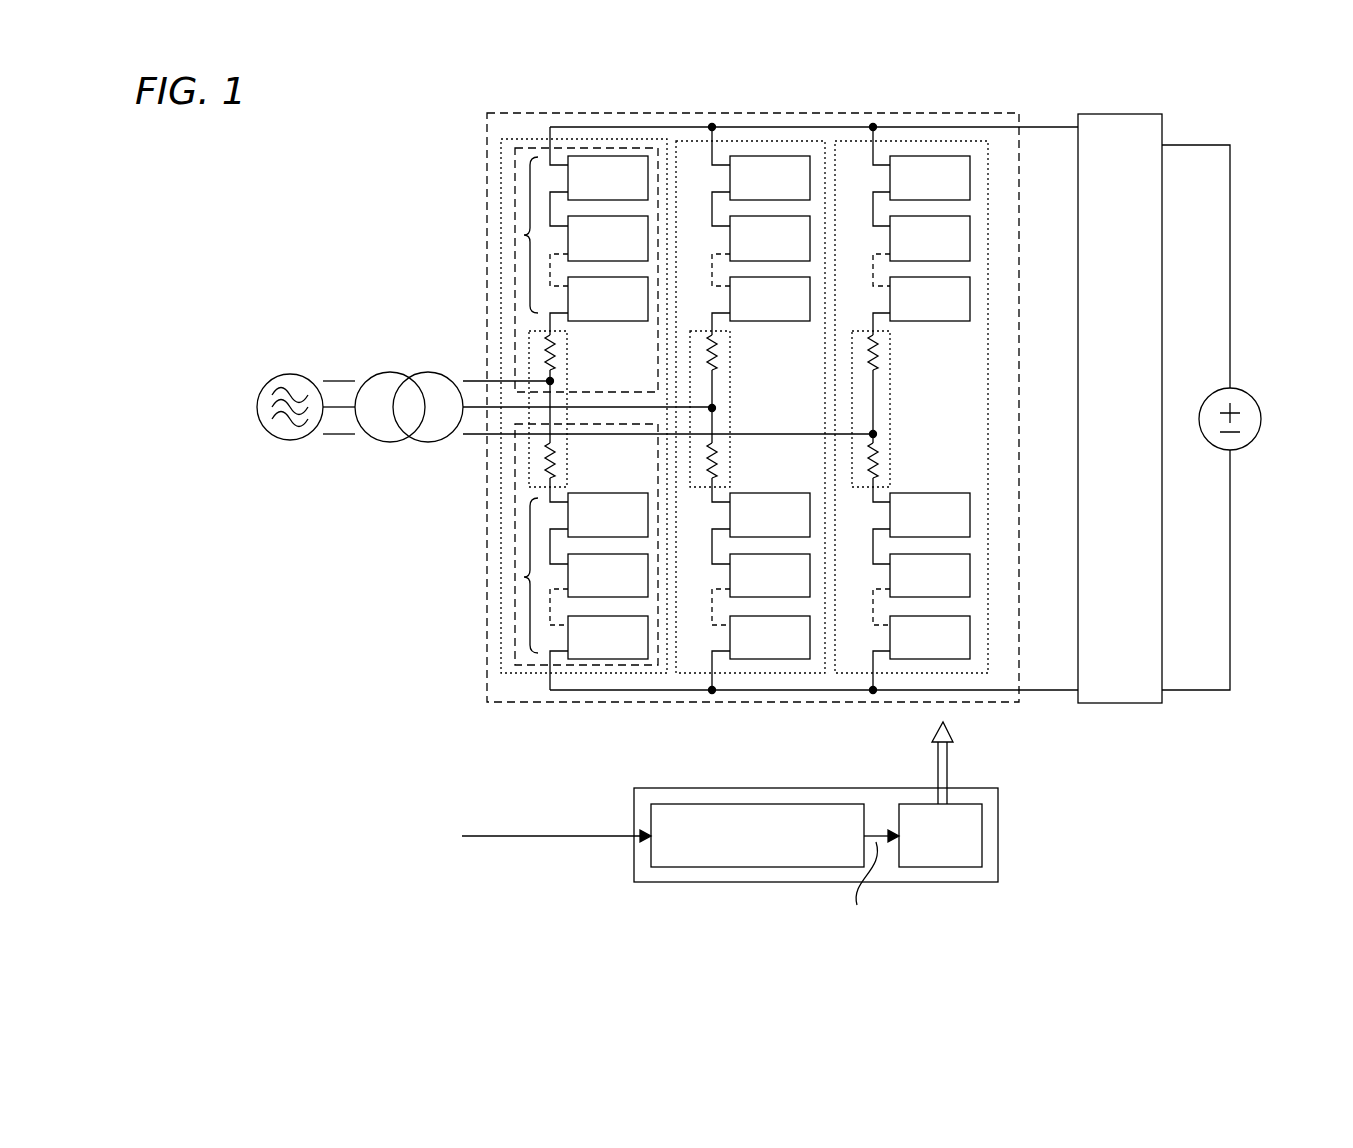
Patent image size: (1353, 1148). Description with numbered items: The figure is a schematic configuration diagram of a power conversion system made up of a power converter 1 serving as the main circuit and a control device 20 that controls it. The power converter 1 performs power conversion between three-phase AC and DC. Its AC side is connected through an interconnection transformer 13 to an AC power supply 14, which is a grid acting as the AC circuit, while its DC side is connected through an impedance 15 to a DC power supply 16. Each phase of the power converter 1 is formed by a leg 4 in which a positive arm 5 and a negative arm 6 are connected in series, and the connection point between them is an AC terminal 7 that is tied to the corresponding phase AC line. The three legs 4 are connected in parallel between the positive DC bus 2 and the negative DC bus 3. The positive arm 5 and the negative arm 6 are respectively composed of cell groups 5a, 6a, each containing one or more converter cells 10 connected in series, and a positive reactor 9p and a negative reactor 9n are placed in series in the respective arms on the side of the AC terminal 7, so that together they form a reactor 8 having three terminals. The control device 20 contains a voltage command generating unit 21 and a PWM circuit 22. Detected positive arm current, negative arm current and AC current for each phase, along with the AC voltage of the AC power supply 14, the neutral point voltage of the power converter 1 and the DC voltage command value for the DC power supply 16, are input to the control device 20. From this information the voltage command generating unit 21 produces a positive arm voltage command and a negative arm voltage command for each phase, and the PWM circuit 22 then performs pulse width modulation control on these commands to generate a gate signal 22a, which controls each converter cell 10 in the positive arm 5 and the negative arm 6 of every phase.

The power converter 1 is at (672, 113).
The positive DC bus 2 is at (1045, 126).
The negative DC bus 3 is at (1055, 692).
The leg 4 is at (527, 675).
The positive arm 5 is at (518, 172).
The cell group 5a is at (525, 235).
The negative arm 6 is at (516, 513).
The cell group 6a is at (525, 577).
The AC terminal 7 is at (550, 381).
The reactor 8 is at (573, 380).
The positive reactor 9p is at (560, 349).
The negative reactor 9n is at (560, 456).
The converter cell 10 is at (597, 155).
The interconnection transformer 13 is at (412, 372).
The AC power supply 14 is at (292, 375).
The impedance 15 is at (1130, 113).
The DC power supply 16 is at (1243, 392).
The control device 20 is at (780, 882).
The voltage command generating unit 21 is at (730, 868).
The PWM circuit 22 is at (970, 868).
The gate signal 22a is at (950, 766).